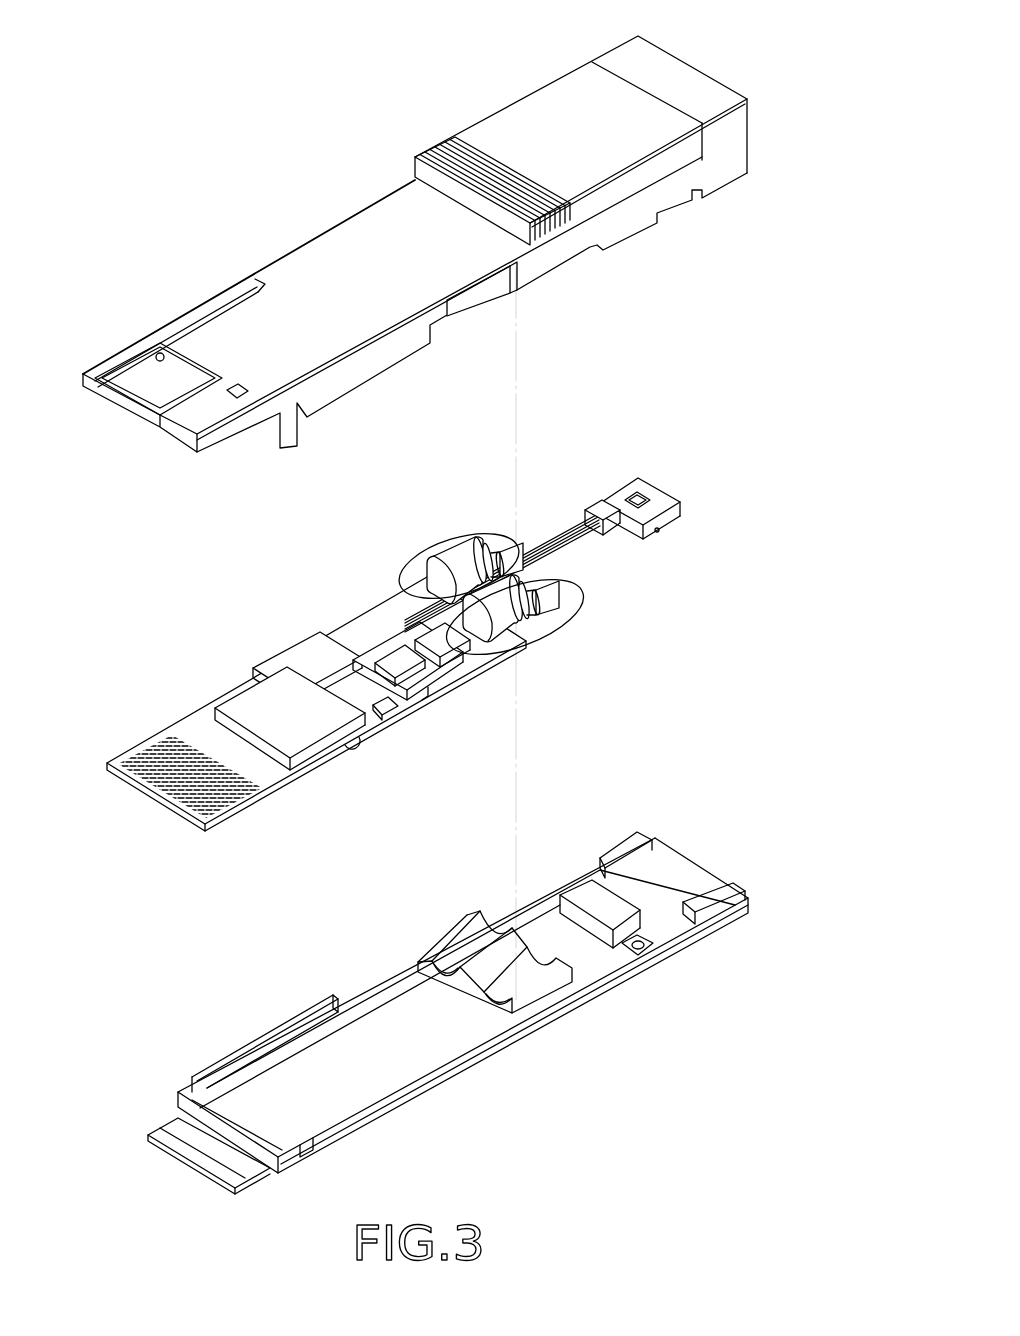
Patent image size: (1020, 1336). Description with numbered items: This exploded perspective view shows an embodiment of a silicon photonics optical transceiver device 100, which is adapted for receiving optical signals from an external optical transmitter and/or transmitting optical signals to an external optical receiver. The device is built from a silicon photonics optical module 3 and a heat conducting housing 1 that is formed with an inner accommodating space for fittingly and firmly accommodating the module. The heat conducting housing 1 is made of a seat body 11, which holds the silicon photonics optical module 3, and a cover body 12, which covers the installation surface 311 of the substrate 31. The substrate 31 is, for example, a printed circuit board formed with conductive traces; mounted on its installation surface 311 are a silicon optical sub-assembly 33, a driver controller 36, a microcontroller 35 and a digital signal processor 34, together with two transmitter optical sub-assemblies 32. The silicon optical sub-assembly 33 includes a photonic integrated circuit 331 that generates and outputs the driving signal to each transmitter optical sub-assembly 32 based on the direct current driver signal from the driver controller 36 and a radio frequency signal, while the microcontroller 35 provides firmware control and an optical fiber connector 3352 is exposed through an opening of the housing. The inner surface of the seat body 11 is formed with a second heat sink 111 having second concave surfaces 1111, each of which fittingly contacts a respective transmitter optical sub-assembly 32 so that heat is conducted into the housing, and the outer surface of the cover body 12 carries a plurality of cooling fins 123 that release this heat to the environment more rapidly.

The silicon photonics optical transceiver device 100 is at (128, 42).
The heat conducting housing 1 is at (845, 113).
The seat body 11 is at (722, 868).
The second heat sink 111 is at (492, 975).
The second concave surfaces 1111 is at (440, 963).
The cover body 12 is at (762, 130).
The cooling fins 123 is at (455, 147).
The silicon photonics optical module 3 is at (143, 742).
The substrate 31 is at (382, 645).
The installation surface 311 is at (207, 735).
The transmitter optical sub-assemblies 32 is at (507, 600).
The silicon optical sub-assembly 33 is at (438, 657).
The photonic integrated circuit 331 is at (385, 643).
The optical fiber connector 3352 is at (648, 495).
The digital signal processor 34 is at (253, 708).
The microcontroller 35 is at (303, 660).
The driver controller 36 is at (385, 718).